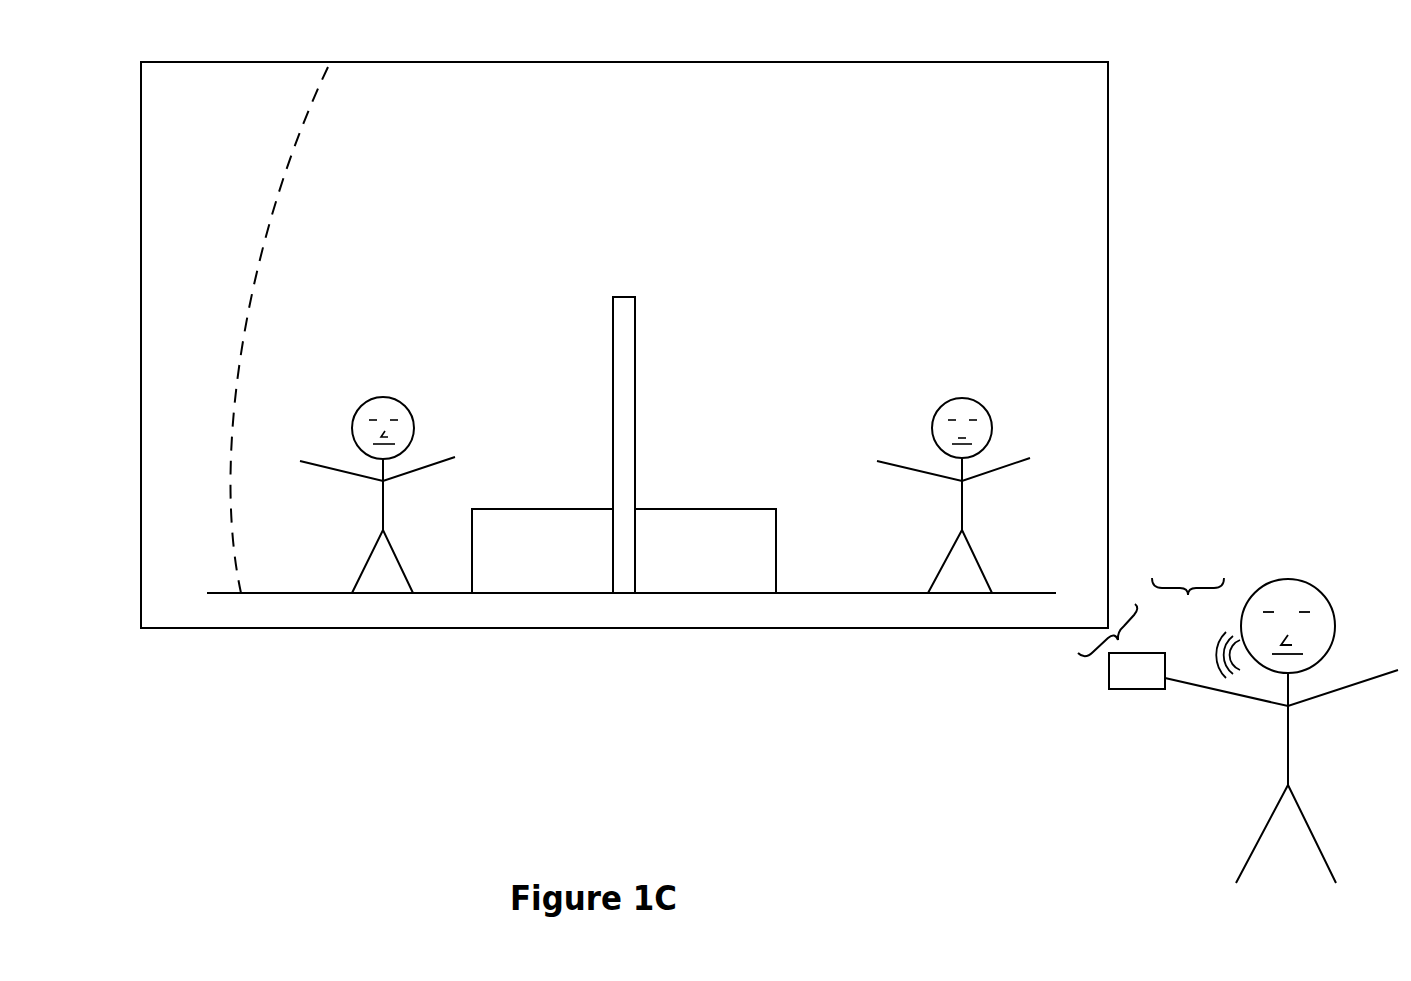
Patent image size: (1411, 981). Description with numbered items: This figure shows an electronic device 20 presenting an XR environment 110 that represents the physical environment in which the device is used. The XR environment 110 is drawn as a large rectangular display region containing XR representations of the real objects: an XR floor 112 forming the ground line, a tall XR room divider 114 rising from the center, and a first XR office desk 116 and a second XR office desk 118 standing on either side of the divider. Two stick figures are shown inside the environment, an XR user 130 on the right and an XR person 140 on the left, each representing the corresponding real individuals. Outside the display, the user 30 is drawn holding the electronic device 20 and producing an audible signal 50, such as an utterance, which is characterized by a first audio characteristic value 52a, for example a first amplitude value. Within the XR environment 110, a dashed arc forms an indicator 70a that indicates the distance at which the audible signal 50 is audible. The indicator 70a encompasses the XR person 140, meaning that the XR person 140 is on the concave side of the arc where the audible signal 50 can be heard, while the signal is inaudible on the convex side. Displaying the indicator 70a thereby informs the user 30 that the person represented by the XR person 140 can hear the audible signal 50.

The XR environment 110 is at (138, 56).
The XR floor 112 is at (224, 592).
The indicator 70a is at (283, 161).
The XR room divider 114 is at (623, 297).
The first XR office desk 116 is at (719, 509).
The second XR office desk 118 is at (549, 509).
The XR user 130 is at (938, 578).
The XR person 140 is at (360, 578).
The user 30 is at (1248, 860).
The electronic device 20 is at (1151, 684).
The audible signal 50 is at (1226, 624).
The first audio characteristic value 52a is at (1188, 575).